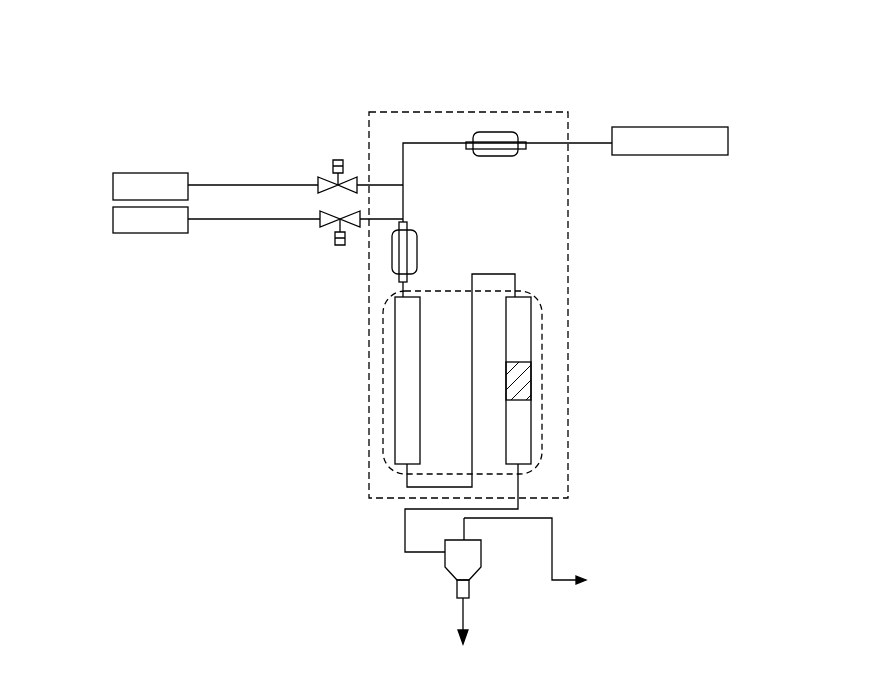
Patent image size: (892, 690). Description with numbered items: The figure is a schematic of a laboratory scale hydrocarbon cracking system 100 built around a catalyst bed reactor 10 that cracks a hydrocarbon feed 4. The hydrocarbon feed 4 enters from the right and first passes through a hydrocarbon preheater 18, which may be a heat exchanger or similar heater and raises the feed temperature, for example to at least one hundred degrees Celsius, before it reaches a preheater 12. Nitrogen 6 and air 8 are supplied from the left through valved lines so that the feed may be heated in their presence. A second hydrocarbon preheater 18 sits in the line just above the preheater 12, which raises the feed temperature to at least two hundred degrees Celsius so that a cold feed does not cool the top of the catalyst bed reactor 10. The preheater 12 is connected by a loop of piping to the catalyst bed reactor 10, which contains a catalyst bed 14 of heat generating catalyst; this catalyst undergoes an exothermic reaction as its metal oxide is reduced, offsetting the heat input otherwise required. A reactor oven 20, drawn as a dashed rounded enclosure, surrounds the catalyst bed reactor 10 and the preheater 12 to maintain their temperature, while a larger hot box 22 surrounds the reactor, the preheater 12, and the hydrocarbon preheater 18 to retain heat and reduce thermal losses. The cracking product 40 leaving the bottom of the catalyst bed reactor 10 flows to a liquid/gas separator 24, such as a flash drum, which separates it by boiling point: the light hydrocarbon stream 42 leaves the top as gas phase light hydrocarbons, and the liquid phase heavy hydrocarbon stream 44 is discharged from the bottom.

The hydrocarbon cracking system 100 is at (686, 67).
The hydrocarbon feed 4 is at (728, 138).
The nitrogen 6 is at (113, 222).
The air 8 is at (113, 191).
The catalyst bed reactor 10 is at (513, 436).
The preheater 12 is at (394, 343).
The catalyst bed 14 is at (512, 392).
The hydrocarbon preheater 18 is at (500, 158).
The reactor oven 20 is at (542, 326).
The hot box 22 is at (465, 110).
The liquid/gas separator 24 is at (481, 560).
The cracking product 40 is at (405, 535).
The light hydrocarbon stream 42 is at (552, 538).
The heavy hydrocarbon stream 44 is at (440, 618).